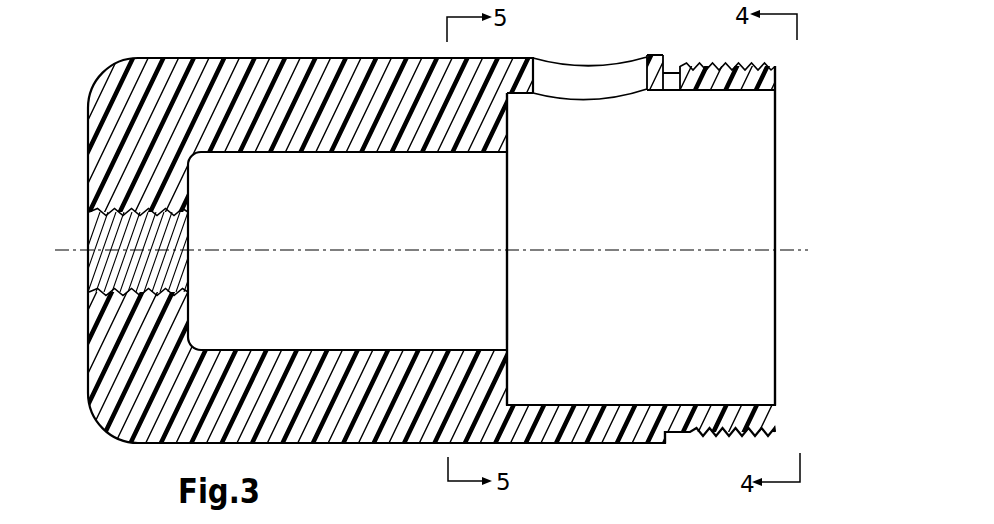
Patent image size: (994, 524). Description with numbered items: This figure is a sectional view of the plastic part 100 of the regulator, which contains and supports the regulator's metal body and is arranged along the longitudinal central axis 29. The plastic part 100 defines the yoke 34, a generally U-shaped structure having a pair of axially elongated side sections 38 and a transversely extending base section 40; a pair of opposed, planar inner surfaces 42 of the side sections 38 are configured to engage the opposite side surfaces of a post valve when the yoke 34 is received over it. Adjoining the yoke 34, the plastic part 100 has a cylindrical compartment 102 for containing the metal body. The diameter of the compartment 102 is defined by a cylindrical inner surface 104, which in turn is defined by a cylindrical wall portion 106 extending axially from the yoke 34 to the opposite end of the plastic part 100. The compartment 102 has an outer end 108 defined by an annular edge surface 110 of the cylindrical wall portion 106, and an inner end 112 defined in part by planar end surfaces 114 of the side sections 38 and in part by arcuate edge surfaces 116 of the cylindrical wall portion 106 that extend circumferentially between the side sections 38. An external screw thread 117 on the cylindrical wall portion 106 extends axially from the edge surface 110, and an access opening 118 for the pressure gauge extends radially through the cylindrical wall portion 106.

The longitudinal central axis 29 is at (60, 250).
The yoke 34 is at (333, 418).
The side sections 38 is at (300, 70).
The base section 40 is at (125, 323).
The inner surfaces 42 is at (390, 152).
The plastic part 100 is at (112, 64).
The cylindrical compartment 102 is at (657, 225).
The cylindrical inner surface 104 is at (570, 408).
The cylindrical wall portion 106 is at (615, 427).
The outer end 108 is at (784, 194).
The annular edge surface 110 is at (774, 73).
The inner end 112 is at (498, 319).
The planar end surfaces 114 is at (508, 126).
The arcuate edge surfaces 116 is at (507, 210).
The external screw thread 117 is at (722, 62).
The access opening 118 is at (563, 62).